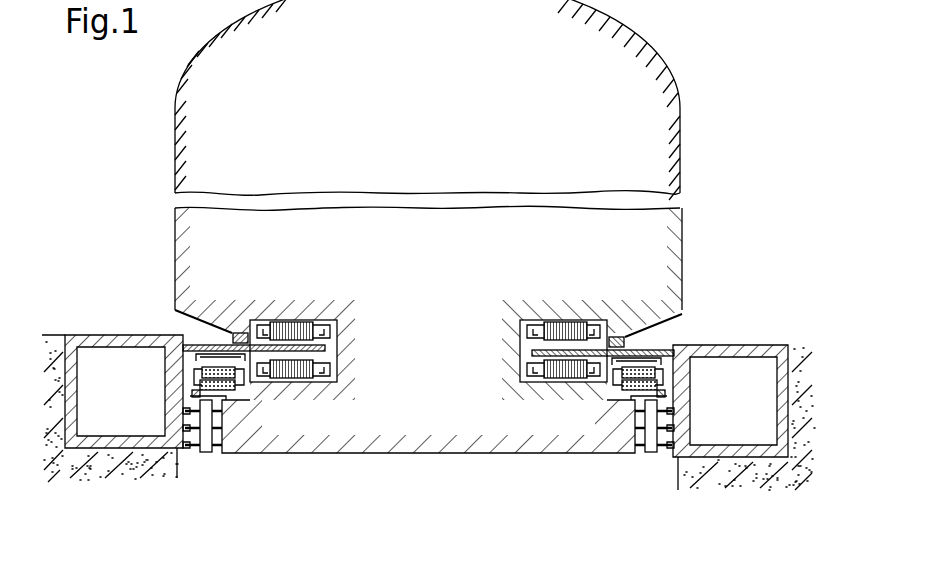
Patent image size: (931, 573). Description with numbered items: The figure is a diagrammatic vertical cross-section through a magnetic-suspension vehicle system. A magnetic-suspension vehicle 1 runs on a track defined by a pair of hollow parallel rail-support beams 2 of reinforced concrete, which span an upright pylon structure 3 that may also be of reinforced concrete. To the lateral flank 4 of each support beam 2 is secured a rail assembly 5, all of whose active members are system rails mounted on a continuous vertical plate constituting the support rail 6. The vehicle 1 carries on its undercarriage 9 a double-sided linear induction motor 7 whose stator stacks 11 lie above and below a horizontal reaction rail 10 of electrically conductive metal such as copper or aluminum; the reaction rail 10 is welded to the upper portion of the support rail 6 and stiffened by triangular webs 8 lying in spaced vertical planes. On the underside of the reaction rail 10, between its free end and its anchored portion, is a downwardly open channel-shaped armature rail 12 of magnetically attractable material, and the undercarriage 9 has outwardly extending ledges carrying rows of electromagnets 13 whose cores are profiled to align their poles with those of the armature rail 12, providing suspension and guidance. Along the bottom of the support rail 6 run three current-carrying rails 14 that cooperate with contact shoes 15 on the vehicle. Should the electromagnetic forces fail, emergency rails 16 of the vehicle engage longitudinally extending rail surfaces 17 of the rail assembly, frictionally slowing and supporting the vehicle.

The magnetic-suspension vehicle 1 is at (681, 122).
The rail-support beam 2 is at (104, 336).
The pylon structure 3 is at (97, 477).
The lateral flank 4 is at (190, 345).
The rail assembly 5 is at (188, 452).
The support rail 6 is at (180, 450).
The linear induction motor 7 is at (293, 380).
The triangular web 8 is at (232, 335).
The undercarriage 9 is at (428, 455).
The reaction rail 10 is at (330, 350).
The stator stack 11 is at (286, 378).
The armature rail 12 is at (232, 335).
The electromagnet 13 is at (200, 374).
The current-carrying rail 14 is at (205, 452).
The contact shoe 15 is at (213, 450).
The emergency rail 16 is at (240, 352).
The emergency rail surface 17 is at (238, 345).